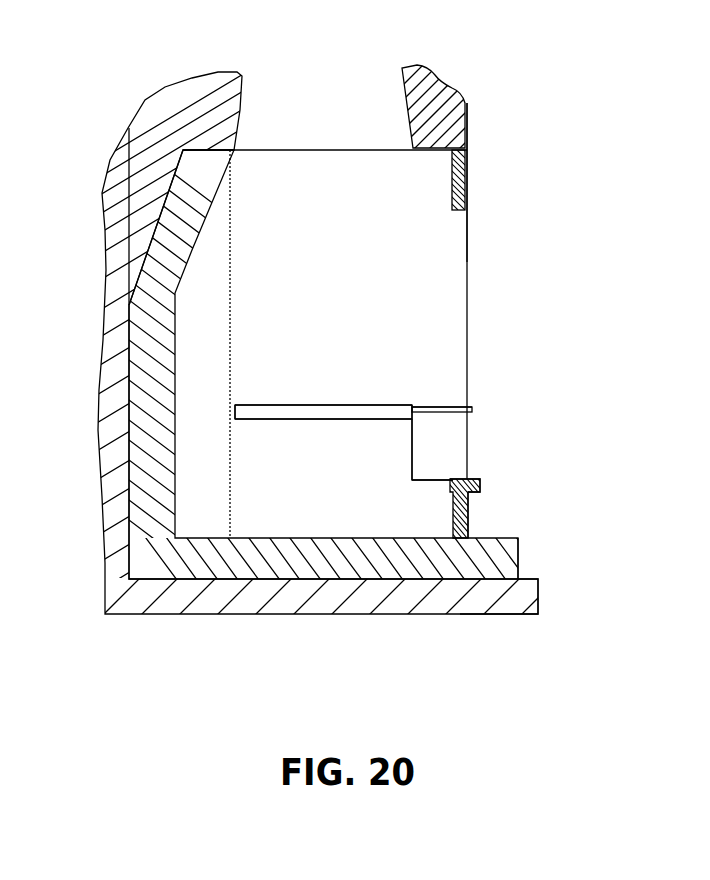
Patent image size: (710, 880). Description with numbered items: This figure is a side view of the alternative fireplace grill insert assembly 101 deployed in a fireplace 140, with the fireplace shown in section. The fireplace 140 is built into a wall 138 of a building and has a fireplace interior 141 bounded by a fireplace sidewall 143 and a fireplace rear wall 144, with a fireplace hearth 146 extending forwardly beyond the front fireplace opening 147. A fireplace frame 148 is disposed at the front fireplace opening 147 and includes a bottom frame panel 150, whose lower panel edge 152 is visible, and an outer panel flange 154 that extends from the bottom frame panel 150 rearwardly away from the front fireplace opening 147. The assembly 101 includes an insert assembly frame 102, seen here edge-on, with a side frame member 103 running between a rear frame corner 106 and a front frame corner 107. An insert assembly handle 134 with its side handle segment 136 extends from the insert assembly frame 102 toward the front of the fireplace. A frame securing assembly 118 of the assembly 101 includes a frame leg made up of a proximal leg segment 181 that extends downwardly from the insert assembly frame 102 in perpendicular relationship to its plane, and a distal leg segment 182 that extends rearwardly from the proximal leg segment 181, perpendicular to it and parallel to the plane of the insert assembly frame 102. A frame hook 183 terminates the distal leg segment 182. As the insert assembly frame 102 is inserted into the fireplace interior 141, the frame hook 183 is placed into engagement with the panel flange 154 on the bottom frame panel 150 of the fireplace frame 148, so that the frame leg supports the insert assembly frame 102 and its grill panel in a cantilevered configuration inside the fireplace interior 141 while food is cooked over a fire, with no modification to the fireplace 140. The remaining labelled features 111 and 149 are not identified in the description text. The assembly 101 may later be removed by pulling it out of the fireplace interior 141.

The fireplace grill insert assembly 101 is at (524, 388).
The insert assembly frame 102 is at (369, 397).
The side frame member 103 is at (328, 426).
The rear frame corner 106 is at (413, 404).
The front frame corner 107 is at (228, 407).
The upper surface of panel 111 is at (283, 404).
The frame securing assembly 118 is at (380, 488).
The insert assembly handle 134 is at (477, 410).
The side handle segment 136 is at (442, 406).
The wall 138 is at (470, 112).
The fireplace 140 is at (478, 122).
The fireplace interior 141 is at (413, 262).
The fireplace sidewall 143 is at (322, 172).
The fireplace rear wall 144 is at (176, 318).
The fireplace hearth 146 is at (515, 537).
The front fireplace opening 147 is at (468, 258).
The fireplace frame 148 is at (480, 182).
The inner surface 149 is at (452, 176).
The bottom frame panel 150 is at (482, 520).
The lower panel edge 152 is at (457, 538).
The outer panel flange 154 is at (453, 478).
The proximal leg segment 181 is at (406, 437).
The distal leg segment 182 is at (441, 480).
The frame hook 183 is at (482, 486).